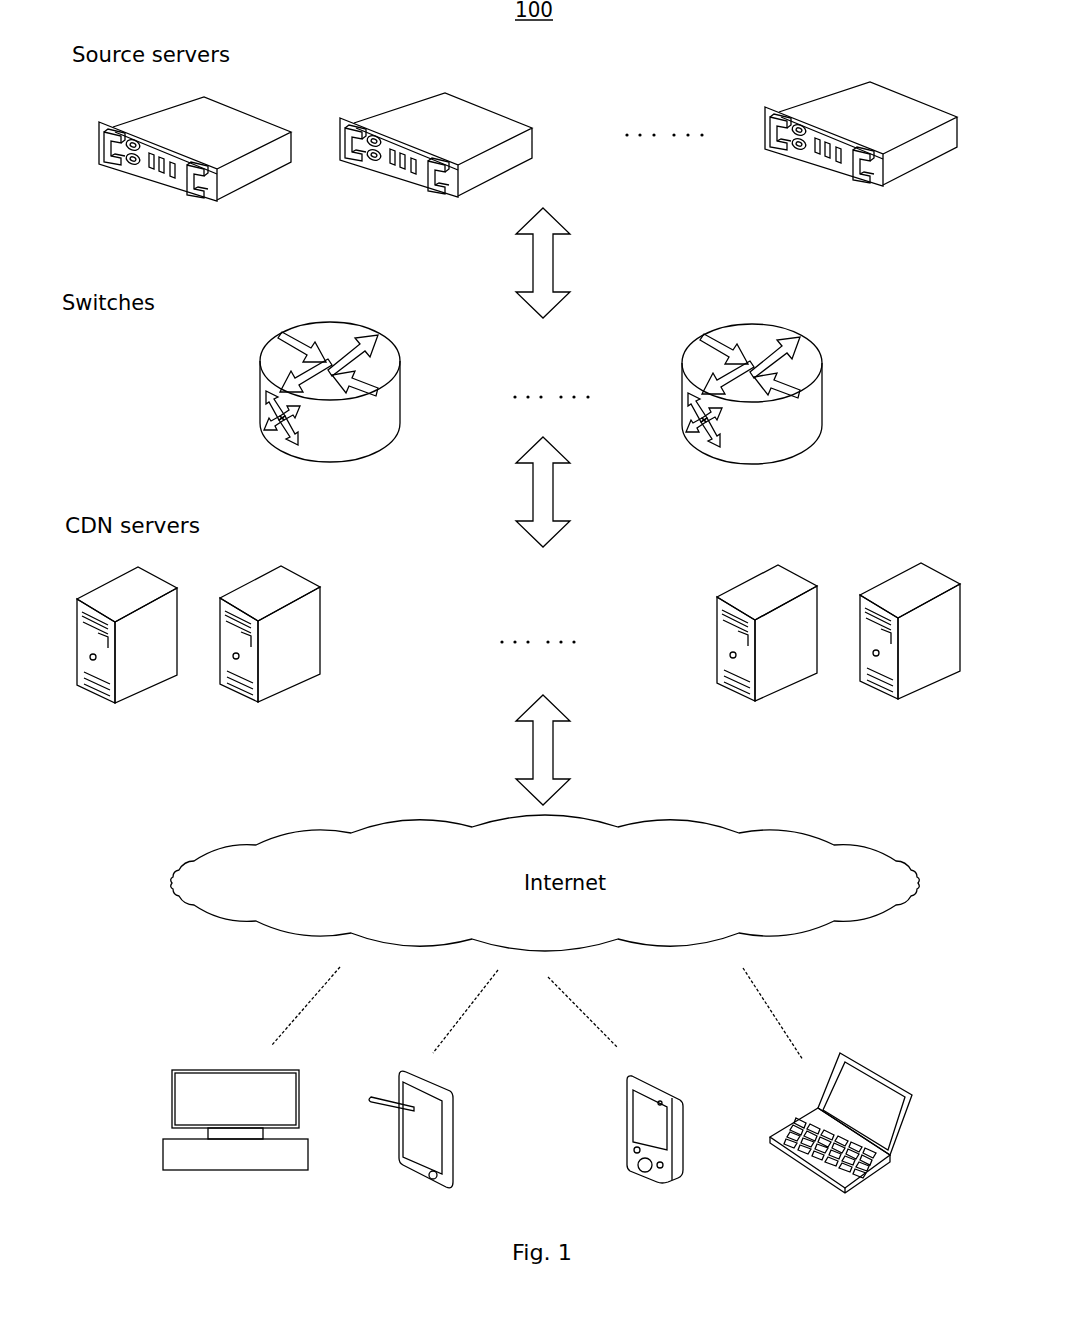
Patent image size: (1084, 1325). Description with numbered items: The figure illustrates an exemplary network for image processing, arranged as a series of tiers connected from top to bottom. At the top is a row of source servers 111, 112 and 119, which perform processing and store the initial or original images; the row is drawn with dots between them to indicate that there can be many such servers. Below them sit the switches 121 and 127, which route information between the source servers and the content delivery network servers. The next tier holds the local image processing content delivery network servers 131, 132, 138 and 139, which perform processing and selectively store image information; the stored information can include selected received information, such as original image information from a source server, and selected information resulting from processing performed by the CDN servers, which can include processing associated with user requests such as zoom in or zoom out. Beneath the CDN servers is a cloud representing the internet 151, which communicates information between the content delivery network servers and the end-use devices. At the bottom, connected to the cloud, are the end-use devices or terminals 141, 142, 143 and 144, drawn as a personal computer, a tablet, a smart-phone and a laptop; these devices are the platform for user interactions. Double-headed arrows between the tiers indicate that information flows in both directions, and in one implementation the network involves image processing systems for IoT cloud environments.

The source server 111 is at (99, 138).
The source server 112 is at (340, 143).
The source server 119 is at (807, 156).
The switch 121 is at (260, 360).
The switch 127 is at (681, 378).
The local image processing content delivery network server 131 is at (77, 673).
The local image processing content delivery network server 132 is at (220, 672).
The local image processing content delivery network server 138 is at (717, 672).
The local image processing content delivery network server 139 is at (860, 670).
The end-use device 141 is at (208, 1070).
The end-use device 142 is at (408, 1070).
The end-use device 143 is at (663, 1080).
The end-use device 144 is at (857, 1060).
The internet 151 is at (303, 840).